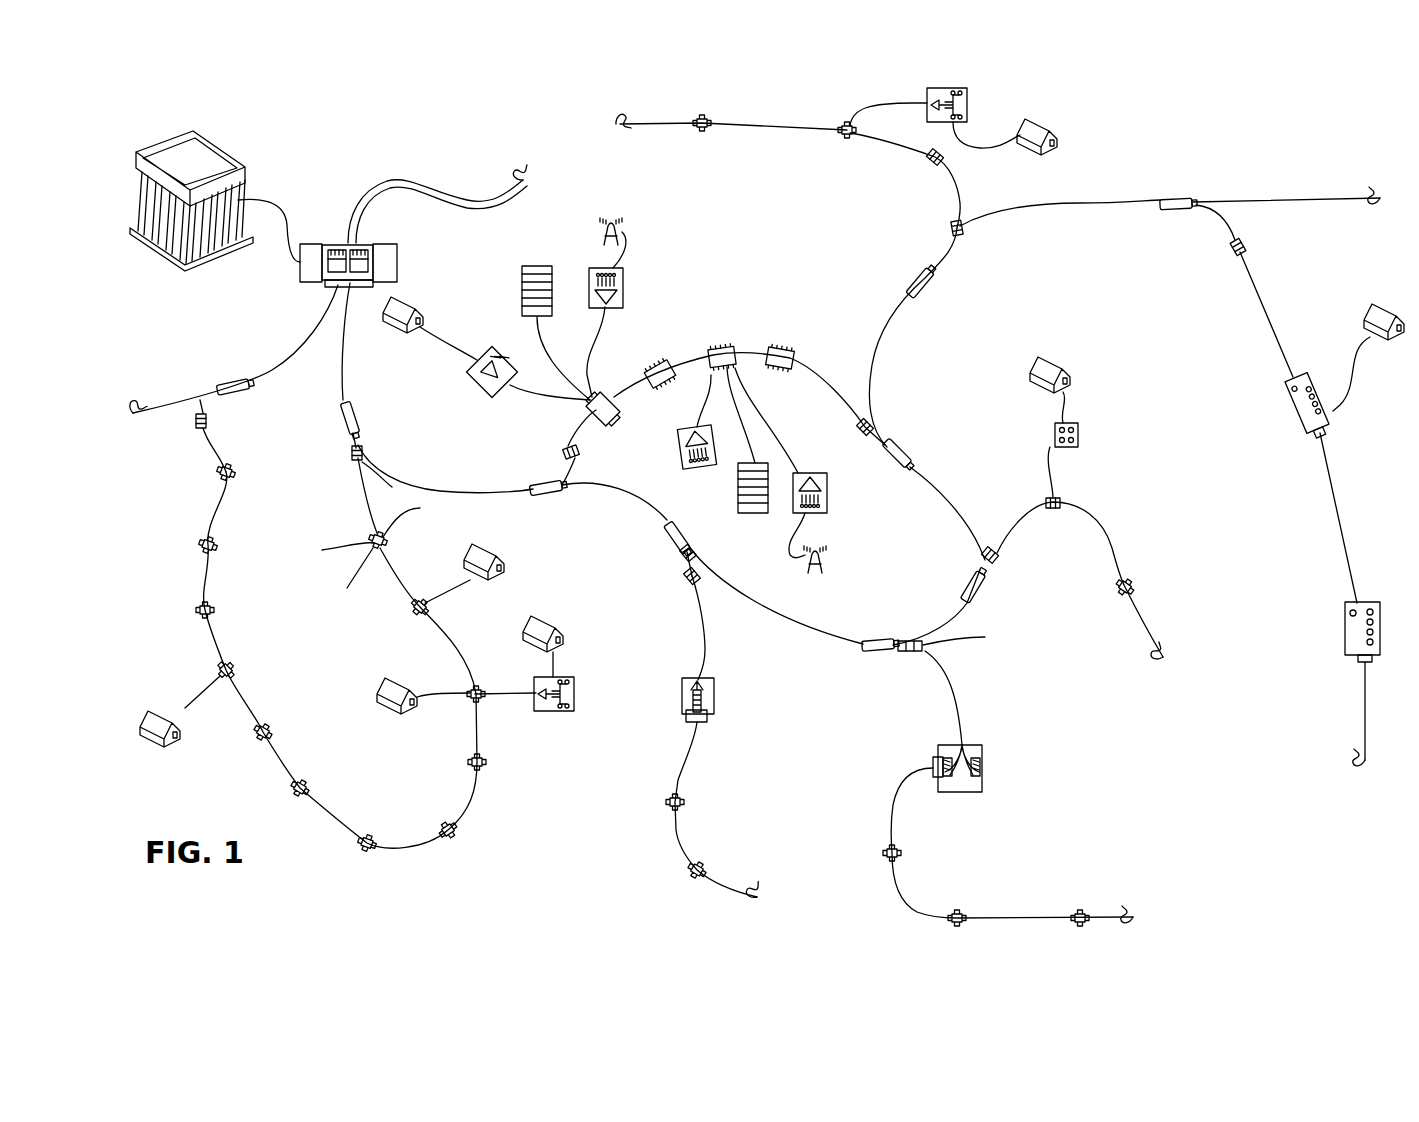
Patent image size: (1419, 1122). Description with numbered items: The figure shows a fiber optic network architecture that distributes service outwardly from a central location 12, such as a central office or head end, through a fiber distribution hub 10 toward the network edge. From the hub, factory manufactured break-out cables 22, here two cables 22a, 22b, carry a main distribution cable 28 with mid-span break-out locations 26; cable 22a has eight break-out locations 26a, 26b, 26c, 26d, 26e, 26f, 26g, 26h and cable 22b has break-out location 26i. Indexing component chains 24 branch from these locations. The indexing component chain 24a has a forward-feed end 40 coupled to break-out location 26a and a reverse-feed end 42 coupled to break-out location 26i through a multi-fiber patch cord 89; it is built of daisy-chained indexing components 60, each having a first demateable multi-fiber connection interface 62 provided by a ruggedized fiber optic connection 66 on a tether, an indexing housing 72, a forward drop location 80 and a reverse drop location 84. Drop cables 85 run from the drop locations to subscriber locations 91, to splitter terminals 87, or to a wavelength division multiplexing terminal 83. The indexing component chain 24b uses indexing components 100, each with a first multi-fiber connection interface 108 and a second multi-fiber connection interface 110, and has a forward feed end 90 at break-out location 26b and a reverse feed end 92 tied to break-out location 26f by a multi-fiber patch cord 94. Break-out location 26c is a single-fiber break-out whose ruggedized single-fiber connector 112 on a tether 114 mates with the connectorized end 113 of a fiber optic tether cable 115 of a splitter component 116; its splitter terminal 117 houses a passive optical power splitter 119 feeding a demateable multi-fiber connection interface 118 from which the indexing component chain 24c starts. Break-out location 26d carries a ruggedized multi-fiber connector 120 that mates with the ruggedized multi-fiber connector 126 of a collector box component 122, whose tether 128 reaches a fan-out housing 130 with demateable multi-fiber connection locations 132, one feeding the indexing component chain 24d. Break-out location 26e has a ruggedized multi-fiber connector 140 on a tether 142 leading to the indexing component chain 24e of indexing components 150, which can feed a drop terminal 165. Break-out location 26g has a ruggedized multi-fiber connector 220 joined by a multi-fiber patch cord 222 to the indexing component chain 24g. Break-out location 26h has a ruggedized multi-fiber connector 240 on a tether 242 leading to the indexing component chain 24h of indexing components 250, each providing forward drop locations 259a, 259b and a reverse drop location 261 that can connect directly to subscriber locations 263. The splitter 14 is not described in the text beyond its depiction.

The fiber distribution hub 10 is at (400, 257).
The central location 12 is at (212, 153).
The splitter 14 is at (386, 541).
The factory manufactured break-out cable 22 is at (168, 414).
The break-out cable 22a is at (412, 482).
The break-out cable 22b is at (296, 355).
The indexing component chain 24 is at (404, 569).
The indexing component chain 24a is at (453, 647).
The indexing component chain 24b is at (600, 422).
The indexing component chain 24c is at (672, 823).
The indexing component chain 24d is at (893, 888).
The indexing component chain 24e is at (1020, 513).
The indexing component chain 24g is at (780, 130).
The indexing component chain 24h is at (1273, 310).
The break-out location 26 is at (243, 380).
The break-out location 26a is at (352, 402).
The break-out location 26b is at (552, 493).
The break-out location 26c is at (688, 543).
The break-out location 26d is at (880, 655).
The break-out location 26e is at (973, 573).
The break-out location 26f is at (902, 447).
The break-out location 26g is at (923, 297).
The break-out location 26h is at (1173, 197).
The break-out location 26i is at (228, 377).
The main distribution cable 28 is at (617, 490).
The forward-feed end 40 is at (352, 458).
The reverse-feed end 42 is at (233, 467).
The indexing component 60 is at (352, 500).
The first demateable multi-fiber connection interface 62 is at (685, 717).
The ruggedized fiber optic connection 66 is at (366, 585).
The indexing housing 72 is at (347, 578).
The forward drop location 80 is at (416, 515).
The wavelength division multiplexing terminal 83 is at (623, 282).
The reverse drop location 84 is at (335, 553).
The drop cable 85 is at (190, 693).
The splitter terminal 87 is at (510, 353).
The multi-fiber patch cord 89 is at (208, 447).
The forward feed end 90 is at (580, 462).
The subscriber location 91 is at (522, 280).
The reverse feed end 92 is at (800, 360).
The multi-fiber patch cord 94 is at (827, 390).
The indexing component 100 is at (580, 426).
The first multi-fiber connection interface 108 is at (568, 452).
The second multi-fiber connection interface 110 is at (608, 395).
The ruggedized single-fiber connector 112 is at (687, 575).
The connectorized end 113 is at (688, 582).
The tether 114 is at (683, 555).
The fiber optic tether cable 115 is at (698, 603).
The splitter component 116 is at (707, 620).
The splitter terminal 117 is at (713, 693).
The demateable multi-fiber connection interface 118 is at (710, 713).
The passive optical power splitter 119 is at (693, 687).
The ruggedized multi-fiber fiber optic connector 120 is at (912, 655).
The collector box component 122 is at (955, 737).
The ruggedized multi-fiber connector 126 is at (973, 640).
The tether 128 is at (958, 685).
The fan-out housing 130 is at (980, 748).
The demateable multi-fiber fiber optic connection location 132 is at (933, 765).
The ruggedized multi-fiber fiber optic connector 140 is at (993, 557).
The tether 142 is at (988, 567).
The indexing component 150 is at (1108, 507).
The drop terminal 165 is at (1080, 433).
The ruggedized multi-fiber fiber optic connector 220 is at (967, 230).
The multi-fiber patch cord 222 is at (960, 190).
The ruggedized multi-fiber fiber optic connector 240 is at (1243, 240).
The tether 242 is at (1220, 213).
The indexing component 250 is at (1283, 387).
The forward drop location 259a is at (1330, 410).
The forward drop location 259b is at (1310, 373).
The reverse drop location 261 is at (1293, 407).
The subscriber location 263 is at (1387, 303).